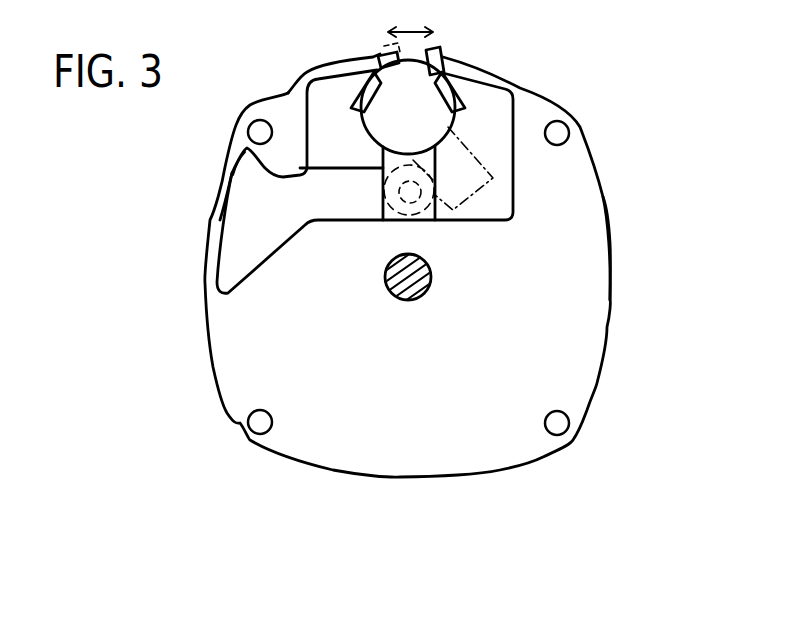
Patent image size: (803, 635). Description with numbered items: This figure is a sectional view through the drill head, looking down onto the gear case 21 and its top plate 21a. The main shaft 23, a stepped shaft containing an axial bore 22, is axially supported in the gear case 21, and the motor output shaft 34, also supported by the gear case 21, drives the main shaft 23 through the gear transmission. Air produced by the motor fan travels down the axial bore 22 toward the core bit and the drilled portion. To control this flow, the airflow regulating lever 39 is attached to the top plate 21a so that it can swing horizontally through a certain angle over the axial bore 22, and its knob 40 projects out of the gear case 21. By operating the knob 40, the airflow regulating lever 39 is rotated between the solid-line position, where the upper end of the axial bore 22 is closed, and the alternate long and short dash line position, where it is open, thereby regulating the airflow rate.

The gear case 21 is at (603, 187).
The top plate 21a is at (597, 330).
The axial bore 22 is at (437, 227).
The main shaft 23 is at (396, 193).
The output shaft 34 is at (410, 285).
The airflow regulating lever 39 is at (437, 126).
The knob 40 is at (440, 53).